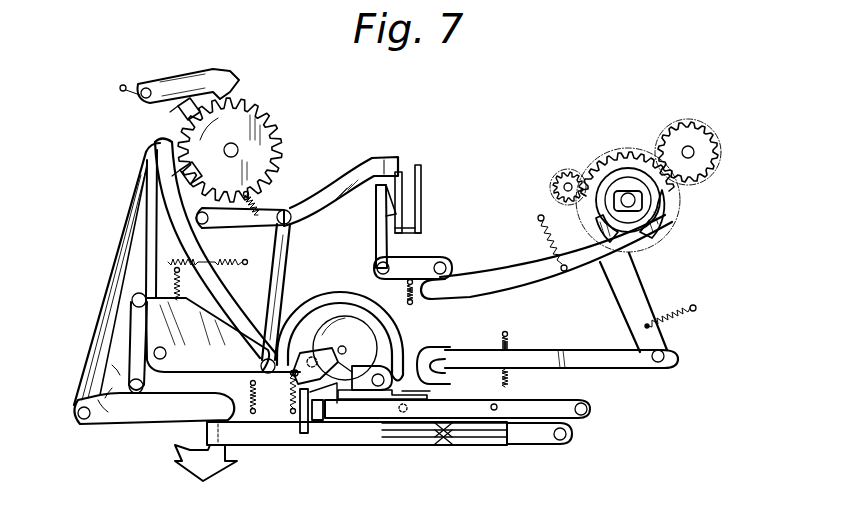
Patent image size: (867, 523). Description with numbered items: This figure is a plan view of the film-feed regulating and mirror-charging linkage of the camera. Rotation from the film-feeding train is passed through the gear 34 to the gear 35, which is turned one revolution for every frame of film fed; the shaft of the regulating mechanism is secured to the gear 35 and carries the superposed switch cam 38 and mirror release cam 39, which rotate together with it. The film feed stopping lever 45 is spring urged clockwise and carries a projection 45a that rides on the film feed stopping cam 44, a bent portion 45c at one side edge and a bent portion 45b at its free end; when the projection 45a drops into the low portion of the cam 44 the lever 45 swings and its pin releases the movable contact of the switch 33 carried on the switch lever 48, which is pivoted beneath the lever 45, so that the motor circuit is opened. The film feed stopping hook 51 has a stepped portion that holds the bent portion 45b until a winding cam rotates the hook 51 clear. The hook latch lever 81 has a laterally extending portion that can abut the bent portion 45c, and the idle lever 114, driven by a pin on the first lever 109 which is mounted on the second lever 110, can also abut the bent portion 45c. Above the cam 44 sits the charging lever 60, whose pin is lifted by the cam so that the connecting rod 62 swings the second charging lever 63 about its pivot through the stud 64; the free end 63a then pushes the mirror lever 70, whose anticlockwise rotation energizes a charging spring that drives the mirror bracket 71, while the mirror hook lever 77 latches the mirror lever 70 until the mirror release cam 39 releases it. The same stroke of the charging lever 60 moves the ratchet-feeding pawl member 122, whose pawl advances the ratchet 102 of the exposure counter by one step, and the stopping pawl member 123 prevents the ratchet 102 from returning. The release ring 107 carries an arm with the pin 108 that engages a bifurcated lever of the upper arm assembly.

The spring linkage 33 is at (444, 447).
The gear 34 is at (689, 120).
The gear 35 is at (615, 162).
The switch cam 38 is at (672, 216).
The mirror release cam 39 is at (665, 200).
The film feed stopping cam 44 is at (360, 334).
The film feed stopping lever 45 is at (536, 408).
The projection 45a is at (337, 385).
The bent portion 45b is at (322, 422).
The bent portion 45c is at (428, 348).
The switch lever 48 is at (528, 440).
The film feed stopping hook 51 is at (304, 433).
The charging lever 60 is at (300, 354).
The connecting rod 62 is at (291, 246).
The second charging lever 63 is at (330, 192).
The free end 63a is at (386, 155).
The stud 64 is at (288, 210).
The mirror lever 70 is at (401, 173).
The mirror bracket 71 is at (422, 176).
The mirror hook lever 77 is at (422, 265).
The hook latch lever 81 is at (540, 360).
The ratchet 102 is at (264, 122).
The release ring 107 is at (184, 143).
The pin 108 is at (140, 207).
The first lever 109 is at (150, 187).
The second lever 110 is at (141, 374).
The idle lever 114 is at (206, 338).
The ratchet-feeding pawl member 122 is at (204, 282).
The stopping pawl member 123 is at (228, 77).